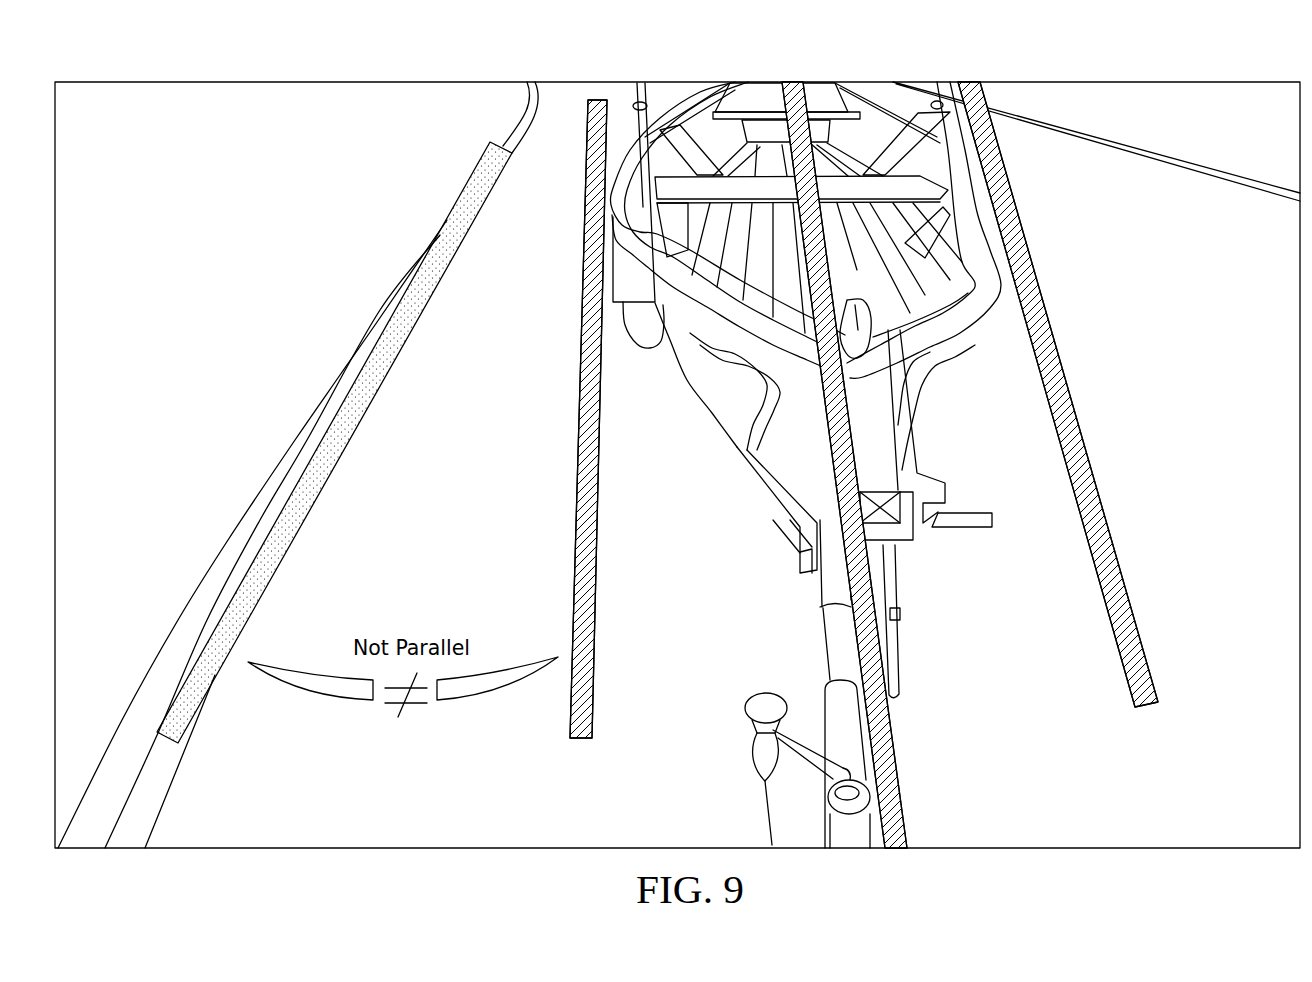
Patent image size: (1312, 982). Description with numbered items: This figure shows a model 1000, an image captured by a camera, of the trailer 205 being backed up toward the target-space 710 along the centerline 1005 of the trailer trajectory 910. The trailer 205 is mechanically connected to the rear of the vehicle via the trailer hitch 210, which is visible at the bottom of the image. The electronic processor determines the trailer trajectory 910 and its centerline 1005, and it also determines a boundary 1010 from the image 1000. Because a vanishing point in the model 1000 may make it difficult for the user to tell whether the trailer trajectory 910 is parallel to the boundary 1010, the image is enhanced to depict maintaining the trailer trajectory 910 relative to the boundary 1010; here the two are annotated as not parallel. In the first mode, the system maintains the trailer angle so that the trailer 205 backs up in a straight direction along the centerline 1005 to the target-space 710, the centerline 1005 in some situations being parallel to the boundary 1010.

The model 1000 is at (140, 68).
The trailer 205 is at (903, 115).
The trailer trajectory 910 is at (598, 527).
The target-space 710 is at (1018, 425).
The boundary 1010 is at (330, 448).
The centerline 1005 is at (860, 582).
The trailer hitch 210 is at (830, 670).